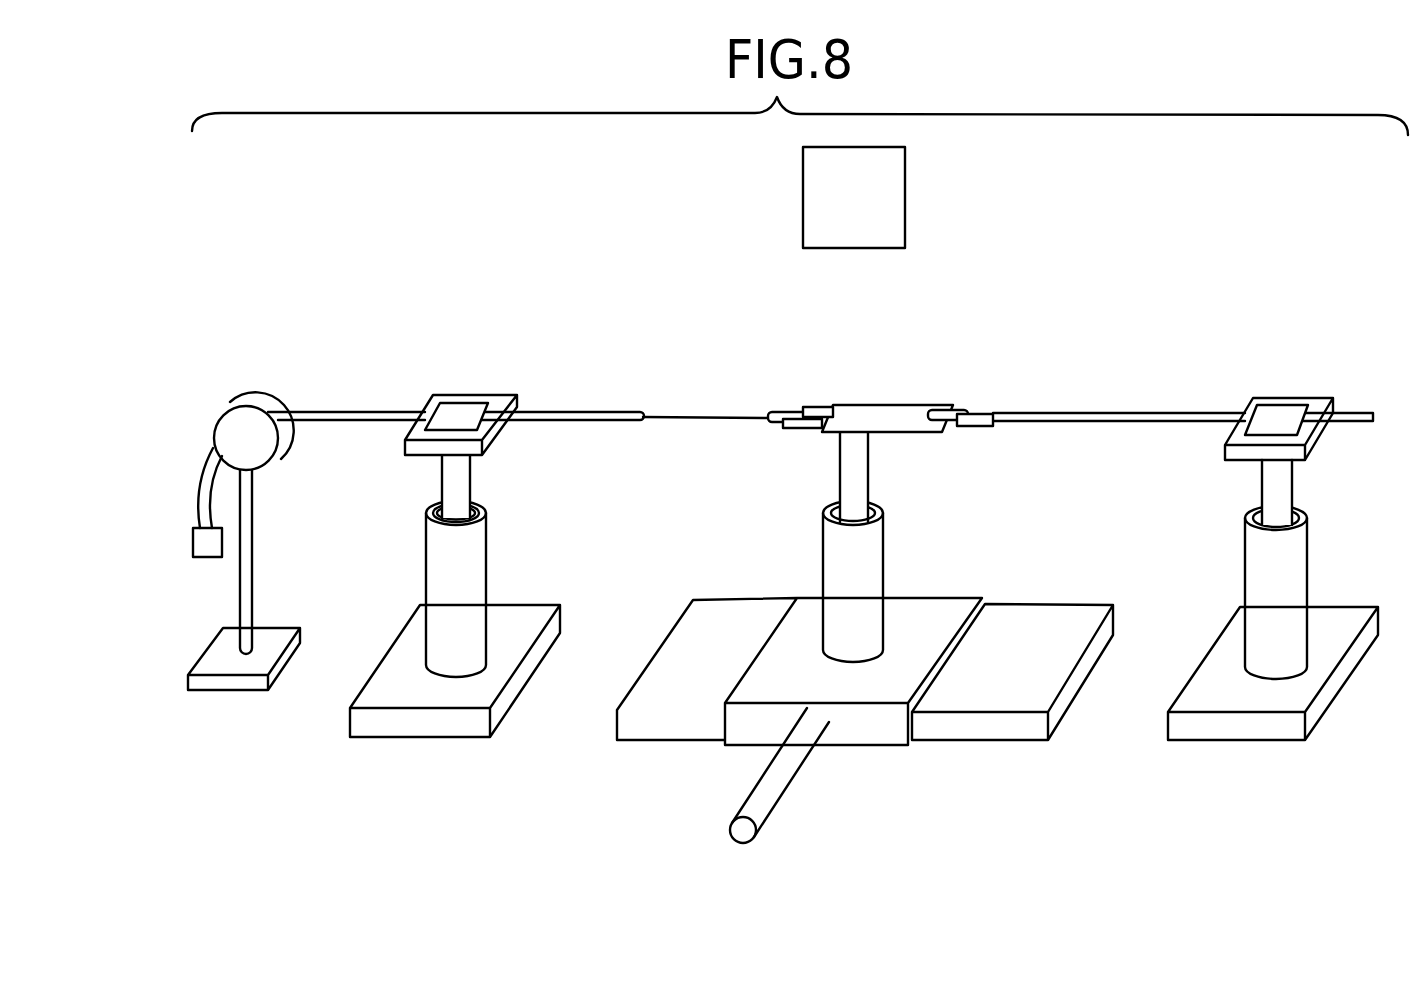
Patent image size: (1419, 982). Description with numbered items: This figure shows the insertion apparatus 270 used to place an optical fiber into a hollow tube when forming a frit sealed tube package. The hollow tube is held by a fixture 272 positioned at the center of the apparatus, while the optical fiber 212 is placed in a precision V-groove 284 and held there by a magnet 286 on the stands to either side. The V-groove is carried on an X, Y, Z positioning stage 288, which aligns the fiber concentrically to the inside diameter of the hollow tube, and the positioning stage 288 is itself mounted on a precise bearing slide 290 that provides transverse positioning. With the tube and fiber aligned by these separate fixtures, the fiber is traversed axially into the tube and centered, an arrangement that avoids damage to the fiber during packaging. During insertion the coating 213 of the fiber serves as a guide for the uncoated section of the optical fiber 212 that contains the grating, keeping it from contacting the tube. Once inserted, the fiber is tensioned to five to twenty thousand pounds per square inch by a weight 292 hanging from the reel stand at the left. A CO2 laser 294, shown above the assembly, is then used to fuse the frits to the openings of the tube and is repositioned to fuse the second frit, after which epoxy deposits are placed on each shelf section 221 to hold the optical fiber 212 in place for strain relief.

The optical fiber 212 is at (677, 419).
The coating 213 is at (600, 413).
The shelf section 221 is at (802, 430).
The insertion apparatus 270 is at (1069, 288).
The fixture 272 is at (883, 405).
The precision V-groove 284 is at (498, 422).
The magnet 286 is at (462, 412).
The X,Y,Z positioning stage 288 is at (952, 554).
The precise bearing slide 290 is at (882, 747).
The weight 292 is at (195, 558).
The CO2 laser 294 is at (905, 190).